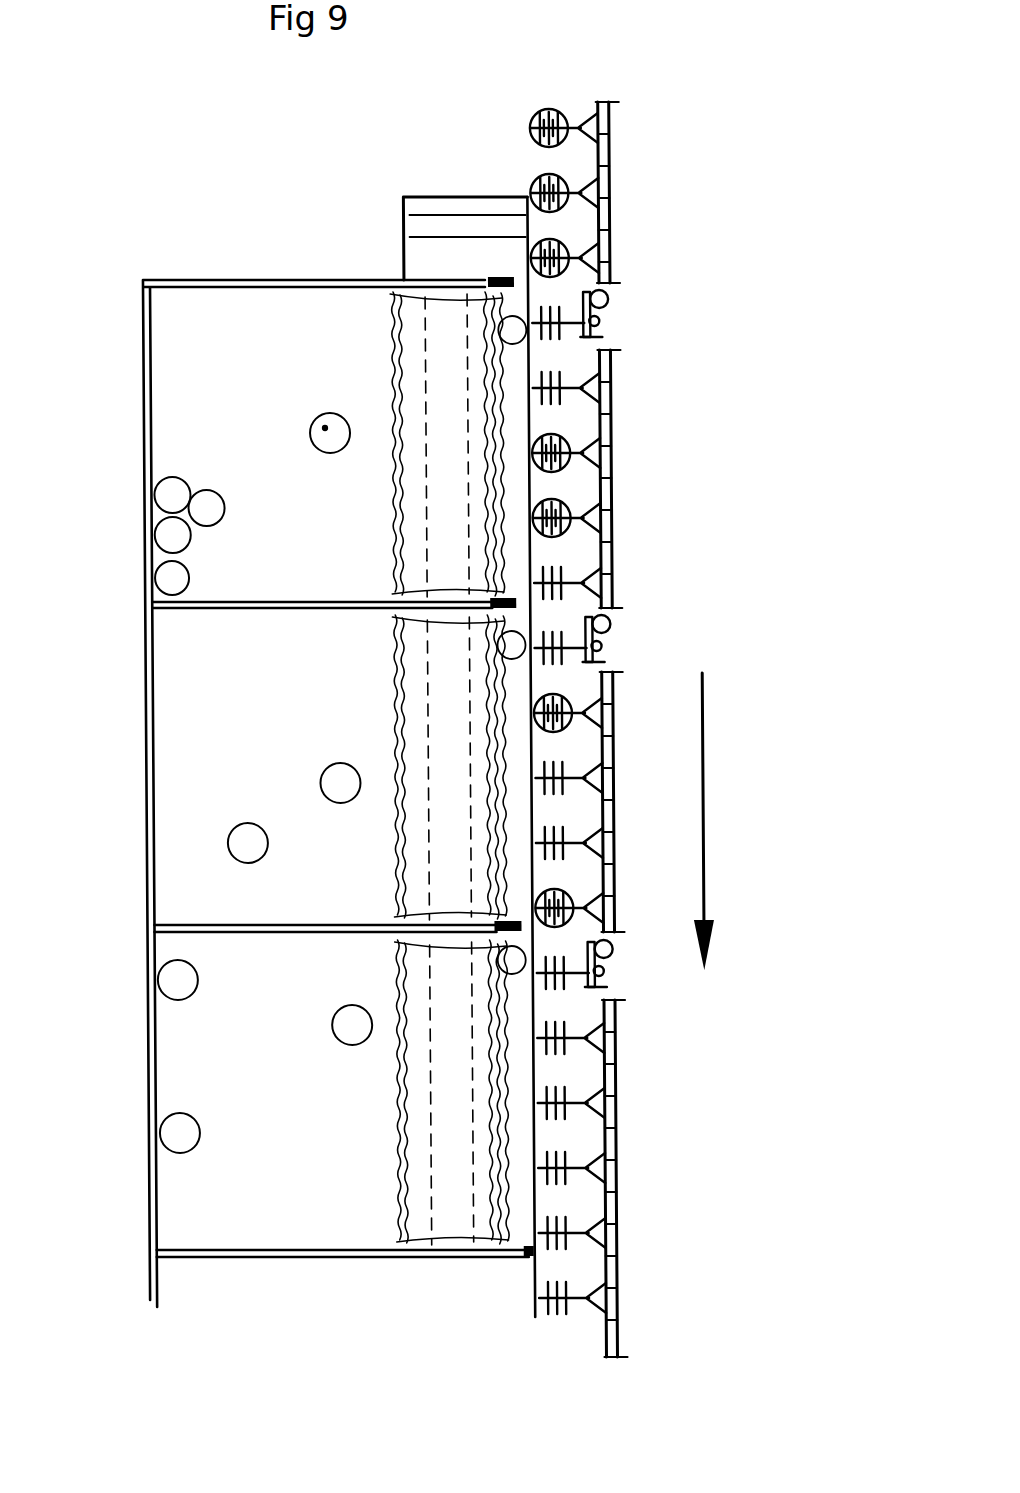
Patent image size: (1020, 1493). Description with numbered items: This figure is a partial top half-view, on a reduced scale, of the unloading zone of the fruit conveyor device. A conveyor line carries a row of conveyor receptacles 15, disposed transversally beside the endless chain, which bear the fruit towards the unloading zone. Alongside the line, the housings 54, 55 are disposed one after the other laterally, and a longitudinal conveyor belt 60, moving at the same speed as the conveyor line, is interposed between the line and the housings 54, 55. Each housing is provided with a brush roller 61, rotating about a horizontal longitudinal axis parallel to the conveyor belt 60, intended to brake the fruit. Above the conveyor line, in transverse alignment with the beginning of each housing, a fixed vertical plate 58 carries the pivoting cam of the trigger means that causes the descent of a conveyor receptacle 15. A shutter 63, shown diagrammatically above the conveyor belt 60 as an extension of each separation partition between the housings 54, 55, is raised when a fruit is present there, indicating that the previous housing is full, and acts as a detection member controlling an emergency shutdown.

The conveyor receptacle 15 is at (548, 108).
The housing 54 is at (160, 375).
The housing 55 is at (175, 795).
The fixed vertical plate 58 is at (592, 322).
The longitudinal conveyor belt 60 is at (410, 232).
The brush roller 61 is at (405, 330).
The shutter 63 is at (512, 606).